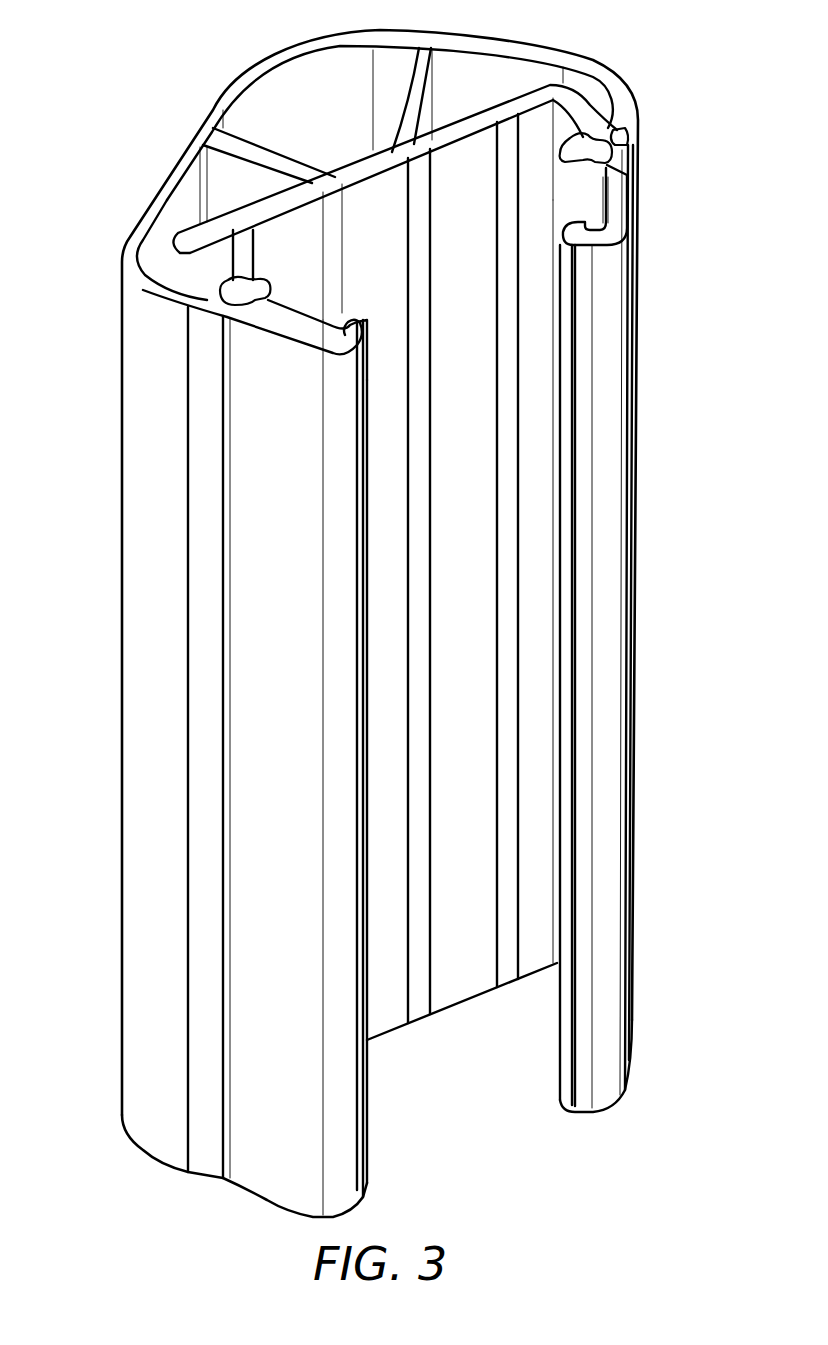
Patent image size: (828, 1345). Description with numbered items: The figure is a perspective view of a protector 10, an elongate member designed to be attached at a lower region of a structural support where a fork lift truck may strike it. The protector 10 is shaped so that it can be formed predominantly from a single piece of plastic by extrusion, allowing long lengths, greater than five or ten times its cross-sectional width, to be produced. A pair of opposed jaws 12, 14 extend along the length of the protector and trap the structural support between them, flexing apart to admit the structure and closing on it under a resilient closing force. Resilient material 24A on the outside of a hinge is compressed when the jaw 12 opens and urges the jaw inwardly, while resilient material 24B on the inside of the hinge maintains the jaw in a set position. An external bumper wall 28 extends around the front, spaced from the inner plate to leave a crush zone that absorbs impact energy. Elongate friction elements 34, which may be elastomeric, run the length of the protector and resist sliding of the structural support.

The protector 10 is at (108, 100).
The jaw 12 is at (600, 366).
The jaw 14 is at (270, 1136).
The resilient material 24A is at (200, 400).
The resilient material 24B is at (600, 147).
The external bumper wall 28 is at (268, 57).
The friction elements 34 is at (416, 1013).